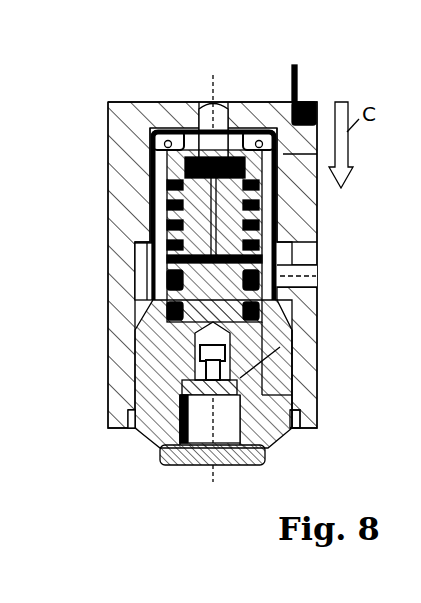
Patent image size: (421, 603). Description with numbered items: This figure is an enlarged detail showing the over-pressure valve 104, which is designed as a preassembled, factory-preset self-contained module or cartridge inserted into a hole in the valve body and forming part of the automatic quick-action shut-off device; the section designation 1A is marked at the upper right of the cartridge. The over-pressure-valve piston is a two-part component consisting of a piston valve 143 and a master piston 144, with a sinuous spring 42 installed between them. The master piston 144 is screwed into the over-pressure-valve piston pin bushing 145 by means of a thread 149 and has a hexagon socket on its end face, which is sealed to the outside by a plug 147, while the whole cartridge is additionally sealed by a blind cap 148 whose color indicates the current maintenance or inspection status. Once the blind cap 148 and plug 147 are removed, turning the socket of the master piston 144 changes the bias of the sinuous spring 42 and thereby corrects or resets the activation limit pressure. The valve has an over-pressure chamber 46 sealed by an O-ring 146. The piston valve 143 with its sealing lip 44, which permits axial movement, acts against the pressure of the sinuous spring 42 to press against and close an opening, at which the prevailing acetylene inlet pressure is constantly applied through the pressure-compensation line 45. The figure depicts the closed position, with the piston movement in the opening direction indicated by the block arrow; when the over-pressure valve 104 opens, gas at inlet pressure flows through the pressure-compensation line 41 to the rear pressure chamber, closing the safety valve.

The section indicator 1A is at (300, 110).
The pressure-compensation line 41 is at (298, 279).
The sinuous spring 42 is at (150, 262).
The sealing lip 44 is at (160, 158).
The pressure-compensation line 45 is at (197, 113).
The over-pressure chamber 46 is at (275, 318).
The over-pressure valve 104 is at (196, 470).
The piston valve 143 is at (185, 205).
The master piston 144 is at (148, 345).
The over-pressure-valve piston pin bushing 145 is at (270, 400).
The O-ring 146 is at (160, 312).
The plug 147 is at (130, 430).
The blind cap 148 is at (165, 461).
The thread 149 is at (270, 368).